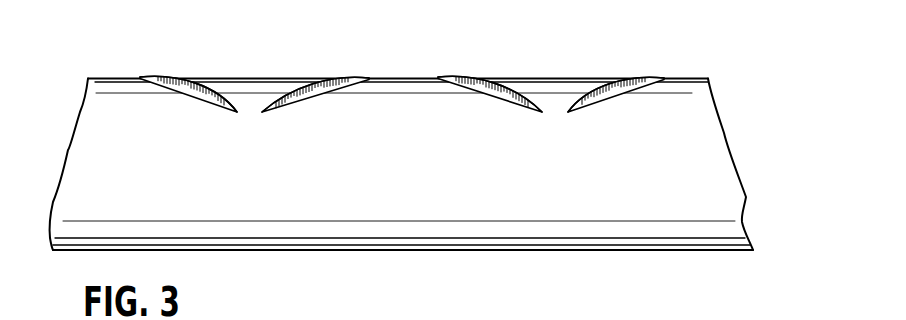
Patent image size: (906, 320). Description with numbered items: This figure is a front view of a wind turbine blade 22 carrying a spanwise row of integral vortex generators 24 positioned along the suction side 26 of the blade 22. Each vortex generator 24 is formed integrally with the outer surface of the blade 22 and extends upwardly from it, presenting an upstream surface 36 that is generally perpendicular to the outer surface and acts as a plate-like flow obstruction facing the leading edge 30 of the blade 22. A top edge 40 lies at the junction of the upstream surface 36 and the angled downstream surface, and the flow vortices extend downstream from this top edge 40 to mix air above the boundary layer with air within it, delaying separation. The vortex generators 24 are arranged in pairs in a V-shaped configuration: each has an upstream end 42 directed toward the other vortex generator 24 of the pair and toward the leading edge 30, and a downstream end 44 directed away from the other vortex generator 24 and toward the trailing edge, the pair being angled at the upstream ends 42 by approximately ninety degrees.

The wind turbine blade 22 is at (731, 134).
The integral vortex generator 24 is at (158, 74).
The suction side 26 is at (103, 153).
The leading edge 30 is at (727, 232).
The upstream surface 36 is at (198, 95).
The top edge 40 is at (200, 80).
The upstream end 42 is at (258, 108).
The downstream end 44 is at (434, 78).